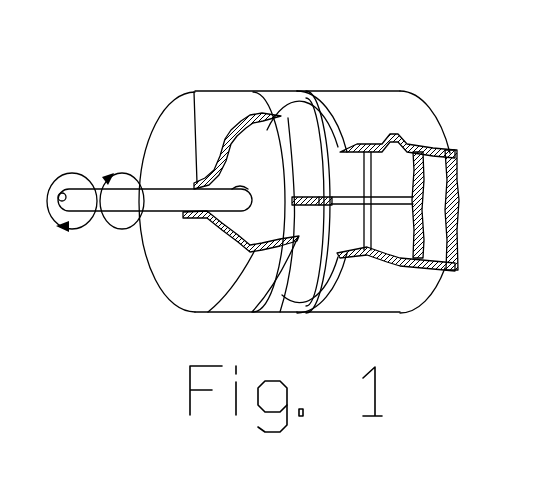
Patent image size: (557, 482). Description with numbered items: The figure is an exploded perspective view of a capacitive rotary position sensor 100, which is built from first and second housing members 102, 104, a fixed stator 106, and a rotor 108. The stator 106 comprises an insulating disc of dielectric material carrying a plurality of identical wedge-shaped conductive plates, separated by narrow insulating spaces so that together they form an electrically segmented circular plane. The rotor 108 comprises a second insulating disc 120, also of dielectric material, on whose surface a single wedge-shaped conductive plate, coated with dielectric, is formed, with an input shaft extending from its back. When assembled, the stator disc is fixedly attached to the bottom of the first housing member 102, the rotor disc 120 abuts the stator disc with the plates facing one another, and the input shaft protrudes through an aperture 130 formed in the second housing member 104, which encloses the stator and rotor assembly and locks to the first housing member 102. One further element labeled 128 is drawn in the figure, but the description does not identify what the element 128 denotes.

The rotary position sensor 100 is at (302, 229).
The first housing member 102 is at (427, 285).
The second housing member 104 is at (182, 299).
The fixed stator 106 is at (430, 170).
The rotor 108 is at (263, 163).
The second insulating disc 120 is at (556, 108).
The coupling member 128 is at (310, 196).
The aperture 130 is at (197, 168).